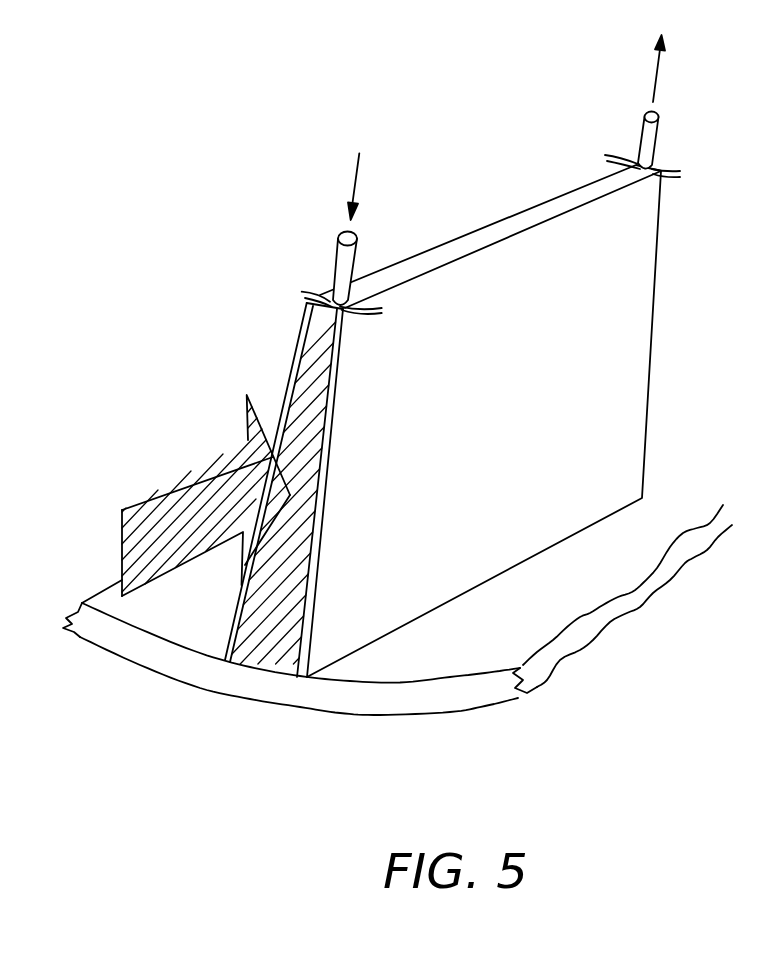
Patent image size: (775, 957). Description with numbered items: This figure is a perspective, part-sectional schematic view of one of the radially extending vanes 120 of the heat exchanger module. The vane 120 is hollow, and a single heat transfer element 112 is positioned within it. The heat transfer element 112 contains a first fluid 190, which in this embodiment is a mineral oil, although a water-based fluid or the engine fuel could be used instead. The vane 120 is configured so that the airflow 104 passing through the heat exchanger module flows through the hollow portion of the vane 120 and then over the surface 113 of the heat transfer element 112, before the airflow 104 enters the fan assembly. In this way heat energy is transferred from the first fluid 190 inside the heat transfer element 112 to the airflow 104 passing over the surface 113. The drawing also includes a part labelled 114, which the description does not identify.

The airflow 104 is at (187, 475).
The heat transfer element 112 is at (308, 377).
The surface 113 is at (320, 338).
The sheet plate 114 is at (653, 333).
The radially extending vane 120 is at (380, 578).
The first fluid 190 is at (357, 187).